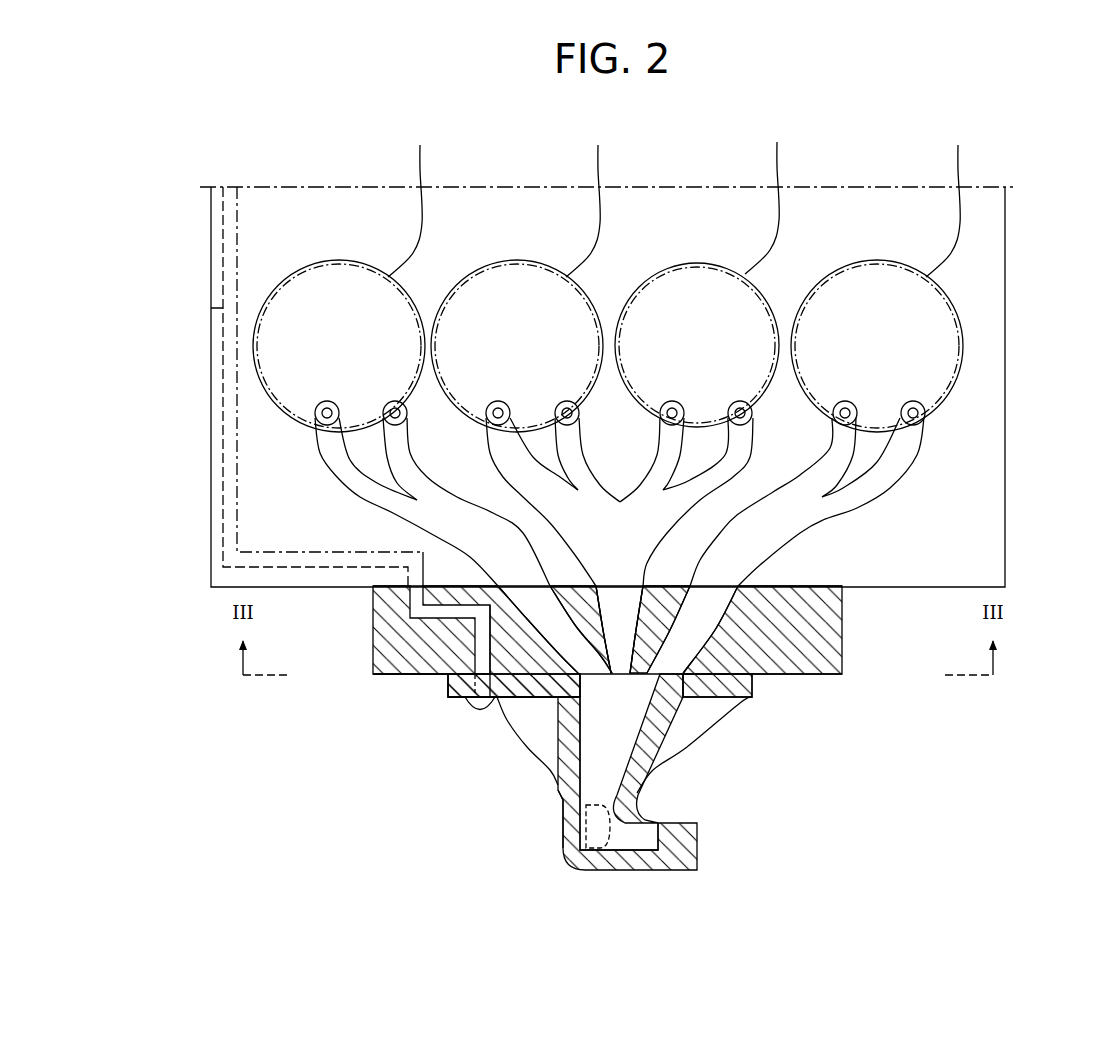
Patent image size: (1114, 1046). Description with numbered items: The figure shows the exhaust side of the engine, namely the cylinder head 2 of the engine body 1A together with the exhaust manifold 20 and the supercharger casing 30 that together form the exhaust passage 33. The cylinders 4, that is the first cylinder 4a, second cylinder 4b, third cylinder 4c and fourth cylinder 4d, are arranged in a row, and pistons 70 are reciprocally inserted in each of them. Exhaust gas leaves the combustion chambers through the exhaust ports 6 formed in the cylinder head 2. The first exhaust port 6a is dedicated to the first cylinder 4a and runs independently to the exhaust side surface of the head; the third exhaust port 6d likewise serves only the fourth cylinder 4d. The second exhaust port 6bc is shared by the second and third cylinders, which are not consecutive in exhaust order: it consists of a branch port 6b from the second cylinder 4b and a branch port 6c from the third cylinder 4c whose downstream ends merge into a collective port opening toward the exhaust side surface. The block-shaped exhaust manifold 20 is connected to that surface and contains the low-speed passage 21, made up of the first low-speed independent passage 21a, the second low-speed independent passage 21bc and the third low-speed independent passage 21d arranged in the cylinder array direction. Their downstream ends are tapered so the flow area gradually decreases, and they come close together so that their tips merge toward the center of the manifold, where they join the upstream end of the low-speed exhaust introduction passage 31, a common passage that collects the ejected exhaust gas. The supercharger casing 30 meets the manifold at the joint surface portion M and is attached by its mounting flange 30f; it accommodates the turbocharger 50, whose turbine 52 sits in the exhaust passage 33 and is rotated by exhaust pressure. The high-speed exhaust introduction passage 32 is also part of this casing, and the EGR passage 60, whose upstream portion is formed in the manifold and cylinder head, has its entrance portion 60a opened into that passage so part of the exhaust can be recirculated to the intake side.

The cylinder head 2 is at (960, 470).
The engine body 1A is at (606, 387).
The cylinders 4 is at (608, 288).
The first cylinder 4a is at (338, 258).
The second cylinder 4b is at (516, 258).
The third cylinder 4c is at (697, 262).
The fourth cylinder 4d is at (876, 258).
The pistons 70 is at (682, 198).
The EGR passage 60 is at (222, 308).
The entrance portion 60a is at (473, 707).
The exhaust ports 6 is at (597, 537).
The first exhaust port 6a is at (313, 452).
The branch port 6b is at (553, 452).
The branch port 6c is at (733, 472).
The third exhaust port 6d is at (927, 446).
The second exhaust port 6bc is at (580, 543).
The exhaust manifold 20 is at (843, 622).
The low-speed passage 21 is at (609, 647).
The first low-speed independent passage 21a is at (535, 590).
The second low-speed independent passage 21bc is at (643, 628).
The third low-speed independent passage 21d is at (712, 605).
The joint surface portion M is at (445, 676).
The low-speed exhaust introduction passage 31 is at (603, 708).
The supercharger casing 30 is at (690, 752).
The mounting flange 30f is at (755, 700).
The high-speed exhaust introduction passage 32 is at (540, 755).
The exhaust passage 33 is at (873, 738).
The turbocharger 50 is at (475, 812).
The turbine 52 is at (583, 830).